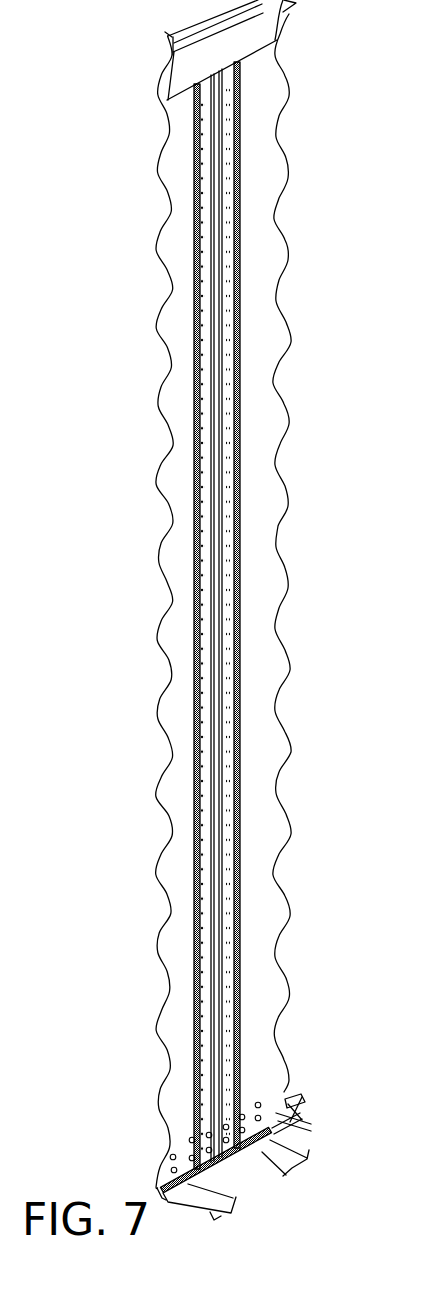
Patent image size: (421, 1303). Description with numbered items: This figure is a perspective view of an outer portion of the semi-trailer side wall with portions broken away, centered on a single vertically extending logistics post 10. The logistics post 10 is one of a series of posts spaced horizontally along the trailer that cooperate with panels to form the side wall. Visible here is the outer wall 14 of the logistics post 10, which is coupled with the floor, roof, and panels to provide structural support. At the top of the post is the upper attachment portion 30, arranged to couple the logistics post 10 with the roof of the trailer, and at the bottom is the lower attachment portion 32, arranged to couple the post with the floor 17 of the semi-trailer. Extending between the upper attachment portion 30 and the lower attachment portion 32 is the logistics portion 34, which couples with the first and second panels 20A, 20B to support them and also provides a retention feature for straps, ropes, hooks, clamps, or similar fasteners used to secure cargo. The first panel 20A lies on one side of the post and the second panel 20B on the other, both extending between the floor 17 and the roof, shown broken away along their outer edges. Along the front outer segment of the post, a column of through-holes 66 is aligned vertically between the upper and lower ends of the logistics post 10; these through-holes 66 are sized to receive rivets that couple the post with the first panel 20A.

The logistics post 10 is at (272, 130).
The outer wall 14 is at (196, 462).
The floor 17 is at (311, 1089).
The first panel 20A is at (170, 330).
The second panel 20B is at (272, 317).
The upper attachment portion 30 is at (213, 107).
The lower attachment portion 32 is at (188, 1120).
The logistics portion 34 is at (233, 552).
The through-holes 66 is at (230, 618).